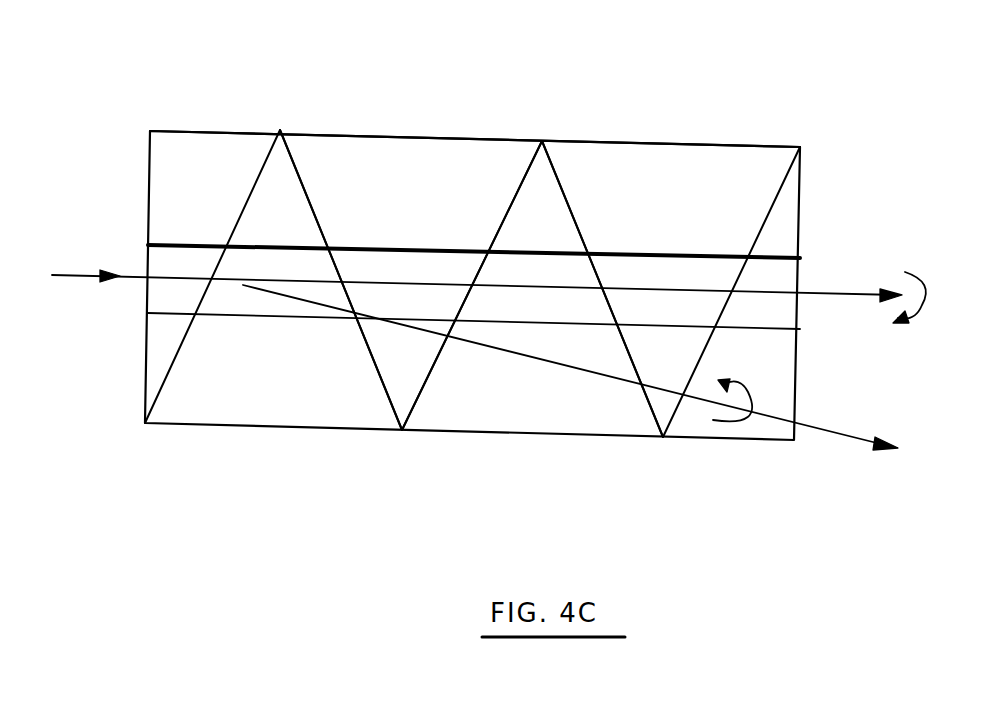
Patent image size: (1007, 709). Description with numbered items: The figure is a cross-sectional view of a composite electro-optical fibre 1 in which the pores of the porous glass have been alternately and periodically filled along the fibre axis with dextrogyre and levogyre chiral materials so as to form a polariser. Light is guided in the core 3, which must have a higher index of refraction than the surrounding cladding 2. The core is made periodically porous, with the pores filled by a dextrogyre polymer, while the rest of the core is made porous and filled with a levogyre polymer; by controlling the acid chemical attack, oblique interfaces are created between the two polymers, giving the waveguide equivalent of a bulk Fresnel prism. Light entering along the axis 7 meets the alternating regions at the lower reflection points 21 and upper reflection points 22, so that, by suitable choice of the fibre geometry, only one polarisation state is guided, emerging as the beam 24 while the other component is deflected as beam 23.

The fibre 1 is at (215, 165).
The cladding 2 is at (150, 161).
The core 3 is at (173, 263).
The optical axis / input beam 7 is at (85, 278).
The lower reflection points of zigzag path 21 is at (478, 381).
The upper reflection points of zigzag path 22 is at (615, 213).
The deflected output beam with rotation 23 is at (570, 388).
The output beam axis with rotation 24 is at (875, 279).